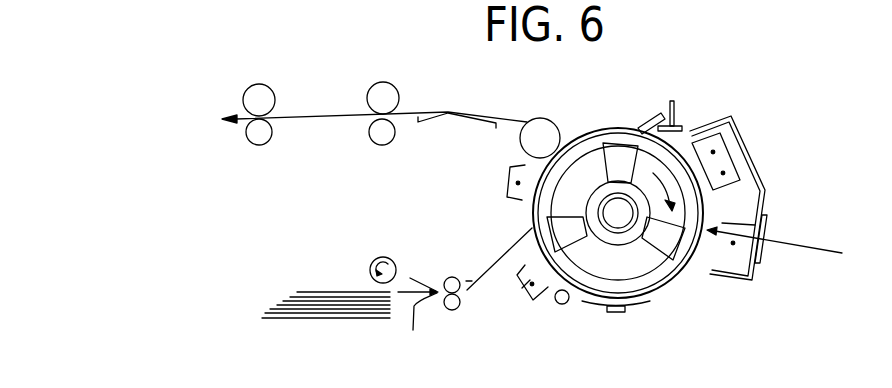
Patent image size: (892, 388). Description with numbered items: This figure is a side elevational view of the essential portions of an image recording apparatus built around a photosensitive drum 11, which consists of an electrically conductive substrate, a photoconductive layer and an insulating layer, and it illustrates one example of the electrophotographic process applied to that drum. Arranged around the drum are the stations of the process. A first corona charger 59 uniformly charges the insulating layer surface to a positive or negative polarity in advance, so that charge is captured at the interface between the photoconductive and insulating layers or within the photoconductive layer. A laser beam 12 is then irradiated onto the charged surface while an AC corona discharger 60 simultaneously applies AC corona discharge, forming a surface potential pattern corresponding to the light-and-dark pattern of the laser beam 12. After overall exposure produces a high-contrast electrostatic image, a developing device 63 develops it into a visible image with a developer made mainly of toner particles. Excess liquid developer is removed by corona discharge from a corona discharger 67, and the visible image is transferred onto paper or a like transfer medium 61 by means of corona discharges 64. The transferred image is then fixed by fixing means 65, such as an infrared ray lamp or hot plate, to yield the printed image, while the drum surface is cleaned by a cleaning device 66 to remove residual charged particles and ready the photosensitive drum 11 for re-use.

The photosensitive drum 11 is at (594, 128).
The laser beam 12 is at (793, 244).
The first corona charger 59 is at (722, 140).
The AC corona discharger 60 is at (728, 263).
The transfer medium 61 is at (352, 319).
The developing device 63 is at (648, 305).
The corona discharge 64 is at (518, 183).
The fixing means 65 is at (448, 113).
The cleaning device 66 is at (651, 120).
The corona discharger 67 is at (519, 290).